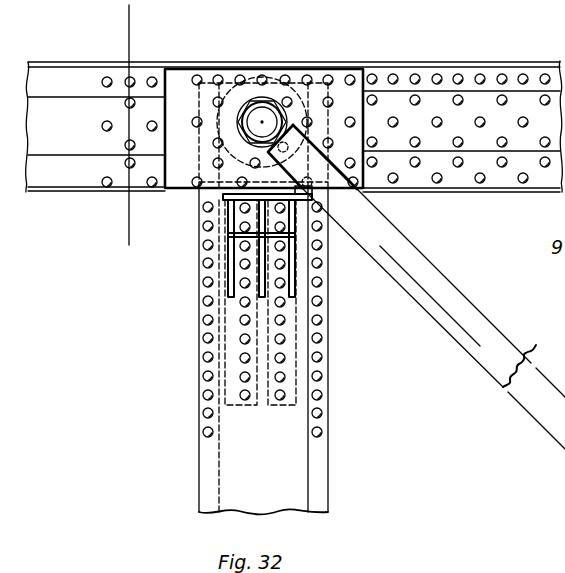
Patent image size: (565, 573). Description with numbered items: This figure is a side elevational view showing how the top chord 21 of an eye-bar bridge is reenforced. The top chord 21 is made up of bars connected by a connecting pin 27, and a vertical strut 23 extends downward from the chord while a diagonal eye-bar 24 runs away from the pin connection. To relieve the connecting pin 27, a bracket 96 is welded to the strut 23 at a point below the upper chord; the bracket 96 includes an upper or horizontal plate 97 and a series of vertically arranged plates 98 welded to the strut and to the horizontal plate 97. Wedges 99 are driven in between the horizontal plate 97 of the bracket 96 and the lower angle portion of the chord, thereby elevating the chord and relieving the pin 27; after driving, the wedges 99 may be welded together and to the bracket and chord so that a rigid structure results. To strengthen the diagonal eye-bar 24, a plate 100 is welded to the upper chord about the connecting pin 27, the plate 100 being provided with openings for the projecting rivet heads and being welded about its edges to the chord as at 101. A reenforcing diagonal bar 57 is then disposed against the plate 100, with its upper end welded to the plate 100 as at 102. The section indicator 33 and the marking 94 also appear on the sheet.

The top chord 21 is at (517, 56).
The vertical strut 23 is at (305, 486).
The diagonal eye-bar 24 is at (539, 421).
The connecting pin 27 is at (263, 121).
The section line 33- 33 is at (121, 35).
The diagonal bar 57 is at (471, 354).
The member 94 is at (542, 572).
The bracket 96 is at (301, 263).
The upper horizontal plate 97 is at (233, 206).
The vertically arranged plates 98 is at (233, 297).
The wedges 99 is at (224, 194).
The plate 100 is at (342, 100).
The edge weld 101 is at (165, 128).
The weld 102 is at (337, 168).